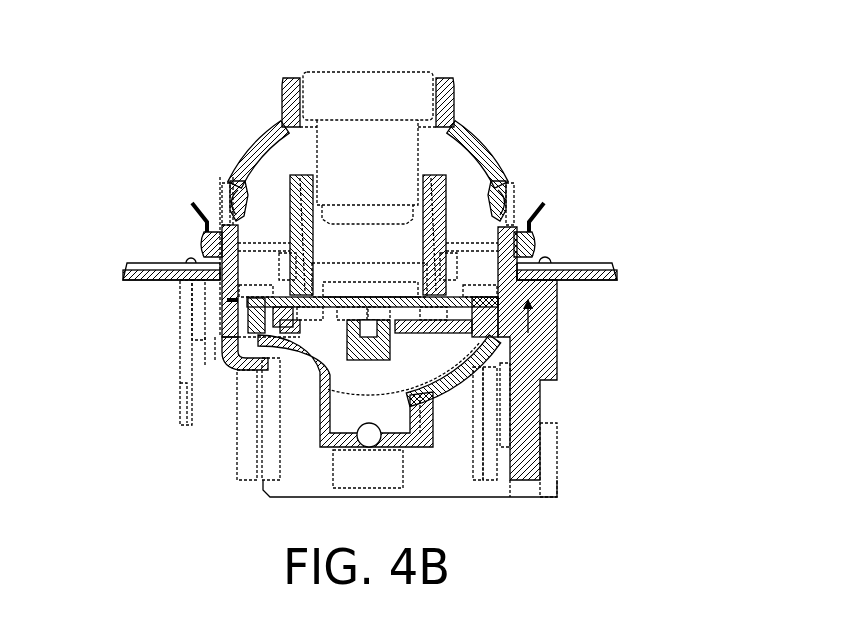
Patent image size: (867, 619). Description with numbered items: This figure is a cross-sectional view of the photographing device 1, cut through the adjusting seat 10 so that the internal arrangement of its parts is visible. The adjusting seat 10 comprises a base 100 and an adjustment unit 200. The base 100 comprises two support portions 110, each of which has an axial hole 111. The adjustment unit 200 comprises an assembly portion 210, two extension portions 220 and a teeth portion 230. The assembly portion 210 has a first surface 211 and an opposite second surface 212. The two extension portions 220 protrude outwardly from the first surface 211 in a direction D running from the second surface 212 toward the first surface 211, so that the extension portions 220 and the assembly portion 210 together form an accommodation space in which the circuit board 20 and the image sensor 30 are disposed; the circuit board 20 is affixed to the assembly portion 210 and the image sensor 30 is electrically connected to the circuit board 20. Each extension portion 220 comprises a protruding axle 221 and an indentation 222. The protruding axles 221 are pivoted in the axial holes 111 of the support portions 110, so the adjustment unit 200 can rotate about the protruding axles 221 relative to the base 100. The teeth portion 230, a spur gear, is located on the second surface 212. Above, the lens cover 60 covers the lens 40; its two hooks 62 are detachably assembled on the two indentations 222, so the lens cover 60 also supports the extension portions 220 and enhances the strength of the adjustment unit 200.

The photographing device 1 is at (86, 57).
The adjusting seat 10 is at (580, 340).
The circuit board 20 is at (222, 303).
The image sensor 30 is at (368, 290).
The lens 40 is at (417, 83).
The lens cover 60 is at (458, 126).
The hooks 62 is at (242, 182).
The base 100 is at (566, 463).
The support portions 110 is at (205, 232).
The axial hole 111 is at (210, 245).
The adjustment unit 200 is at (478, 378).
The assembly portion 210 is at (460, 300).
The first surface 211 is at (445, 330).
The second surface 212 is at (447, 345).
The extension portions 220 is at (220, 286).
The protruding axle 221 is at (200, 247).
The indentation 222 is at (227, 210).
The teeth portion 230 is at (371, 357).
The direction D is at (532, 322).